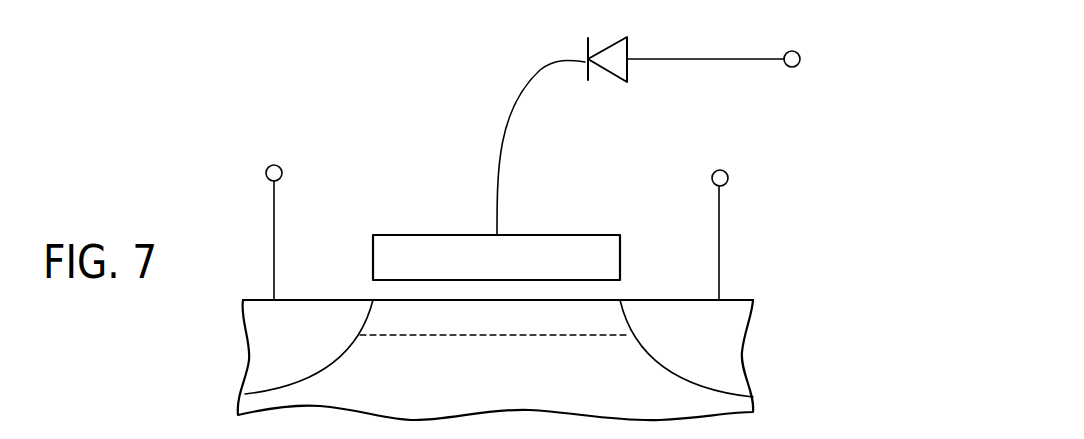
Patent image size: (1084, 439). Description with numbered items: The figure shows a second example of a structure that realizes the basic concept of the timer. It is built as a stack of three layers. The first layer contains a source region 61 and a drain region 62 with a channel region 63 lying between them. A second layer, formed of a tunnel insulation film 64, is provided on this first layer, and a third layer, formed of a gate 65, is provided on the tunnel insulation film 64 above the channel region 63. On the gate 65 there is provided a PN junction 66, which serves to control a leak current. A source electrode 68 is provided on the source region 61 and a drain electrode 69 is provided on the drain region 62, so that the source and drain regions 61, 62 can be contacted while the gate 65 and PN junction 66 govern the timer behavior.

The source region 61 is at (250, 313).
The drain region 62 is at (735, 320).
The channel region 63 is at (553, 340).
The tunnel insulation film 64 is at (607, 290).
The gate 65 is at (622, 243).
The PN junction 66 is at (603, 80).
The source electrode 68 is at (283, 176).
The drain electrode 69 is at (729, 182).